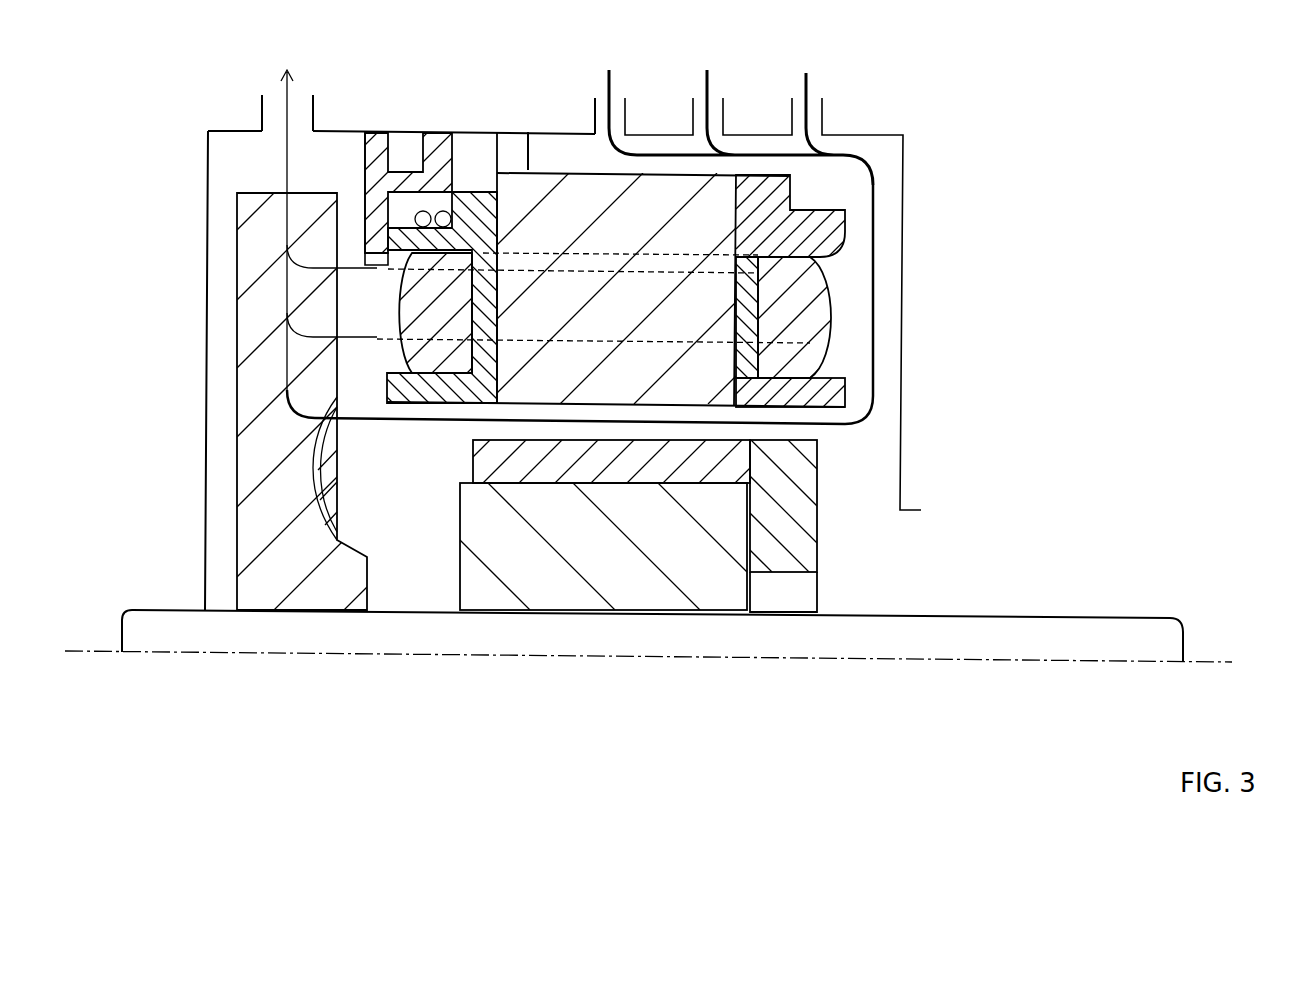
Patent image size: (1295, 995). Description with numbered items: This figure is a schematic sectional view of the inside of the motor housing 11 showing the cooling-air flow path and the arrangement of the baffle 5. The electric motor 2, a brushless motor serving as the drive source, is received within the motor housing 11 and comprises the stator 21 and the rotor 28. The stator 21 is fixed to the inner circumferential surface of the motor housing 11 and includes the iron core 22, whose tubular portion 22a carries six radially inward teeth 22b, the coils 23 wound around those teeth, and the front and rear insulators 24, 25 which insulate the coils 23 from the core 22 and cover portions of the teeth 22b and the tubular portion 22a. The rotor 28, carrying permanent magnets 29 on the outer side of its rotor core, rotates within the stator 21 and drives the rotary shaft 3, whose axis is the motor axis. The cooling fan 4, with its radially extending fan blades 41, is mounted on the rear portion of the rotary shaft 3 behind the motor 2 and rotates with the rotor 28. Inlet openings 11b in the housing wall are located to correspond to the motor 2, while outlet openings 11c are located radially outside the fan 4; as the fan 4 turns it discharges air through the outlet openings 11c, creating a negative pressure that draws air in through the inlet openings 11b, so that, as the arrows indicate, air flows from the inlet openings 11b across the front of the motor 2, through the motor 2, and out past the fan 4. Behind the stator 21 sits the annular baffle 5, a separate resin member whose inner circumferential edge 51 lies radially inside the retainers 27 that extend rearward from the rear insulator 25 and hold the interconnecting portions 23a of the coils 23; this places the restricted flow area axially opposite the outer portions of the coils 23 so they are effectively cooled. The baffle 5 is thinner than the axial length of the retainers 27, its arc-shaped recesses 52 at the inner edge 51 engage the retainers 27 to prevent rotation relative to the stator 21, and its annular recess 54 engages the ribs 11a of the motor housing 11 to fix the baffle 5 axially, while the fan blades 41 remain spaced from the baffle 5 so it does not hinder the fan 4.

The electric motor 2 is at (616, 394).
The rotary shaft 3 is at (210, 632).
The cooling fan 4 is at (216, 526).
The baffle 5 is at (347, 186).
The motor housing 11 is at (222, 100).
The rib 11a is at (397, 149).
The inlet openings 11b is at (820, 118).
The outlet openings 11c is at (260, 112).
The stator 21 is at (566, 157).
The iron core 22 is at (665, 165).
The tubular portion 22a is at (692, 224).
The teeth 22b is at (692, 378).
The coils 23 is at (793, 284).
The interconnecting portion 23a is at (443, 212).
The front insulator 24 is at (750, 323).
The rear insulator 25 is at (485, 293).
The retainers 27 is at (383, 244).
The rotor 28 is at (452, 573).
The permanent magnets 29 is at (625, 458).
The fan blades 41 is at (257, 450).
The inner circumferential edge 51 is at (377, 262).
The arc-shaped recesses 52 is at (385, 243).
The annular recess 54 is at (407, 172).